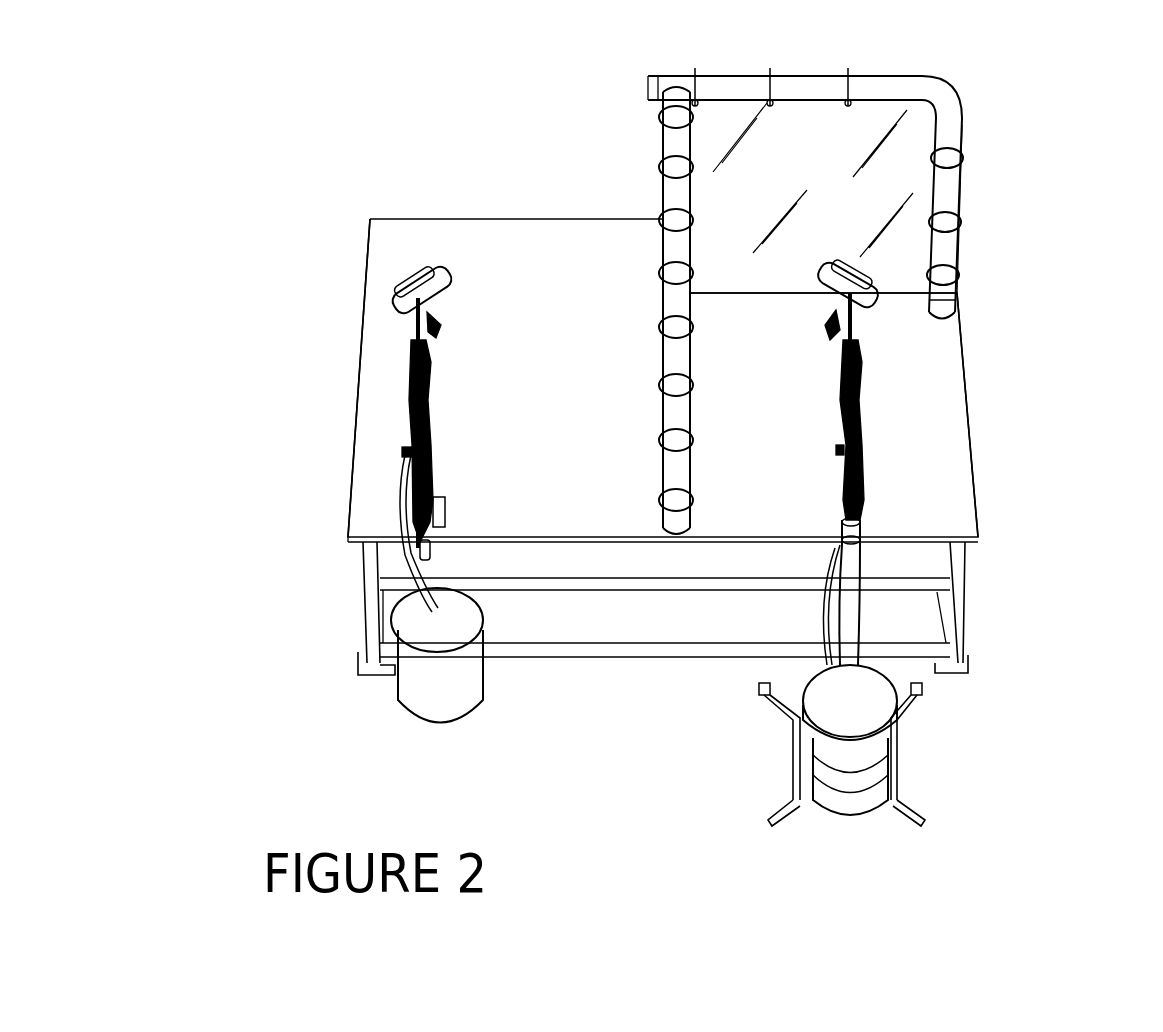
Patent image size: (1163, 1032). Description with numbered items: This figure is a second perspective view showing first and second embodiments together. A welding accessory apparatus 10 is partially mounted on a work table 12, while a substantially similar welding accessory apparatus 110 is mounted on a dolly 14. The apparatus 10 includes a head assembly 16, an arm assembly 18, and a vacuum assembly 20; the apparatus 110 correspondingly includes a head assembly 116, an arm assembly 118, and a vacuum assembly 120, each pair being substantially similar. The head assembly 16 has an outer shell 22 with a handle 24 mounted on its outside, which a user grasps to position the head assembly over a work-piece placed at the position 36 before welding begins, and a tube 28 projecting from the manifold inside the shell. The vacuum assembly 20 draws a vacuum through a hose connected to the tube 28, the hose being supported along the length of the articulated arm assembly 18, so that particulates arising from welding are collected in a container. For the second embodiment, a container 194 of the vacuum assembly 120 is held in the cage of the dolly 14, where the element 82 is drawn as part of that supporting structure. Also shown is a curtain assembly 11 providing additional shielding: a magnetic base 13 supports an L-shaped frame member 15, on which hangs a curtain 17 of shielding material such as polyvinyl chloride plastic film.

The welding accessory apparatus 10 is at (318, 590).
The curtain assembly 11 is at (640, 110).
The work table 12 is at (372, 265).
The magnetic base 13 is at (950, 310).
The dolly 14 is at (928, 795).
The frame member 15 is at (947, 162).
The head assembly 16 is at (357, 320).
The curtain 17 is at (903, 147).
The arm assembly 18 is at (355, 393).
The vacuum assembly 20 is at (420, 735).
The outer shell 22 is at (450, 278).
The handle 24 is at (418, 275).
The tube 28 is at (440, 320).
The work-piece position 36 is at (455, 305).
The bucket stand 82 is at (752, 692).
The welding accessory apparatus 110 is at (1020, 520).
The head assembly 116 is at (883, 322).
The arm assembly 118 is at (912, 415).
The vacuum assembly 120 is at (810, 815).
The container 194 is at (862, 785).